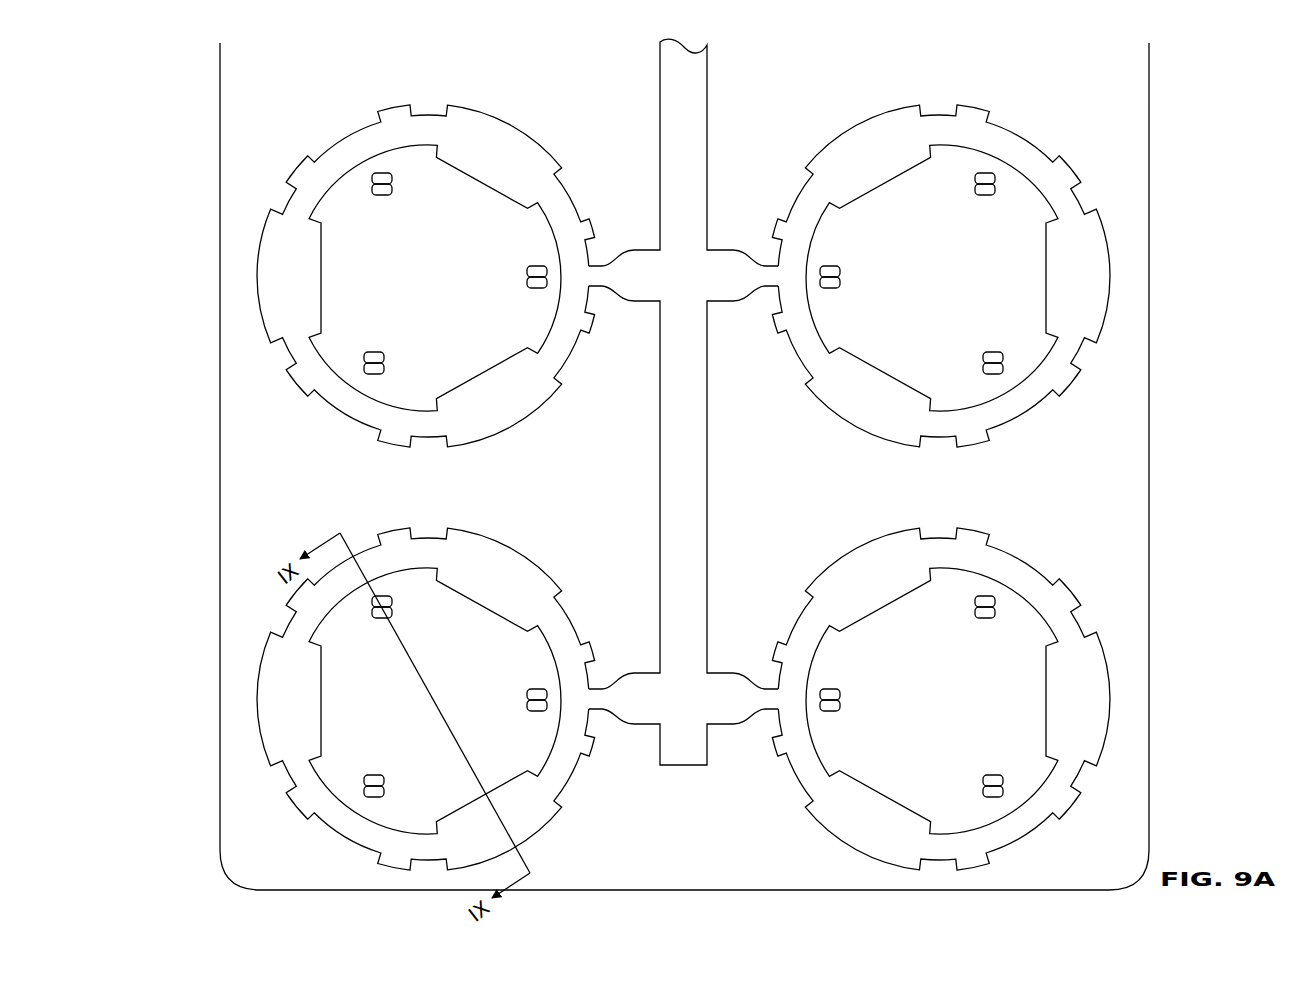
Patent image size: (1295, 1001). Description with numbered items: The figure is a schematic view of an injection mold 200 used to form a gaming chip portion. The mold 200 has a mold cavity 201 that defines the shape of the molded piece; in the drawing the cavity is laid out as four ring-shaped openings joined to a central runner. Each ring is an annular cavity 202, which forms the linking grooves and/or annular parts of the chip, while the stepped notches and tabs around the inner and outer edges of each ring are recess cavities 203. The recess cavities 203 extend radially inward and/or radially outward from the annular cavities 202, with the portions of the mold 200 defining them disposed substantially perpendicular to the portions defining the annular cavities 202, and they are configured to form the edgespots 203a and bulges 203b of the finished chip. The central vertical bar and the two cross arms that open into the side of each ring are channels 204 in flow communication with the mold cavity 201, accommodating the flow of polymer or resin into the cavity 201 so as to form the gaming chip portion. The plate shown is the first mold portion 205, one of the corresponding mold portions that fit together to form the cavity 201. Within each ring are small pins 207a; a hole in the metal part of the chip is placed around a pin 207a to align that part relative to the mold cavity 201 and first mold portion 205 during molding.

The mold 200 is at (733, 466).
The mold cavity 201 is at (688, 465).
The annular cavities 202 is at (605, 509).
The recess cavities 203 is at (693, 546).
The edgespots 203a is at (884, 796).
The bulges 203b is at (687, 293).
The channels 204 is at (692, 402).
The first mold portion 205 is at (1189, 71).
The pins 207a is at (807, 505).